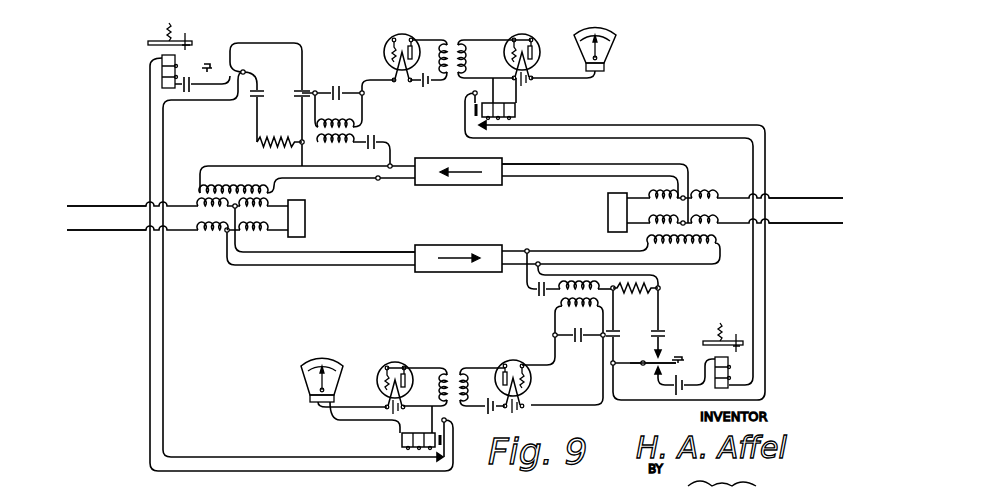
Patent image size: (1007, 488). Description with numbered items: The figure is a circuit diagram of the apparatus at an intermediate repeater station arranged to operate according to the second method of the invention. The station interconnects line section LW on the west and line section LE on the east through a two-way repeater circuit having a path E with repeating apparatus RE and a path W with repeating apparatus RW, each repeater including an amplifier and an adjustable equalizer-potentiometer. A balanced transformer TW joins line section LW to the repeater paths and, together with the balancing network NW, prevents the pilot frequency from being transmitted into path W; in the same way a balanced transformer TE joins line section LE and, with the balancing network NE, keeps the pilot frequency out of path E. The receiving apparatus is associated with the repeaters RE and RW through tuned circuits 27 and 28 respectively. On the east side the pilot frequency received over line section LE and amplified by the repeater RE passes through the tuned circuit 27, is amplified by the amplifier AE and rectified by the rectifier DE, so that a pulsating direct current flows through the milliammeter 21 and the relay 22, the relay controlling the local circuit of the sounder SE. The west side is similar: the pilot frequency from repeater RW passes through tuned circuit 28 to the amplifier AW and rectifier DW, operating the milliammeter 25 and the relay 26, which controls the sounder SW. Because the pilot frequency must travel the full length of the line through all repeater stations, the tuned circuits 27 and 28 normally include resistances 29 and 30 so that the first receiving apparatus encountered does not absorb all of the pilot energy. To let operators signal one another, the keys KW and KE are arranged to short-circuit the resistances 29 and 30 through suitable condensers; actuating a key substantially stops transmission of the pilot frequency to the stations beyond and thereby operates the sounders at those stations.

The milliammeter 21 is at (614, 32).
The relay 22 is at (516, 112).
The milliammeter 25 is at (299, 380).
The relay 26 is at (413, 431).
The tuned circuit 27 is at (367, 152).
The tuned circuit 28 is at (524, 284).
The resistance 29 is at (258, 140).
The resistance 30 is at (640, 293).
The sounder SW is at (160, 66).
The key KW is at (228, 56).
The amplifier AE is at (404, 35).
The rectifier DE is at (519, 34).
The repeater RE is at (435, 168).
The path E is at (560, 170).
The transformer TW is at (190, 190).
The line section LW is at (107, 218).
The balancing network NW is at (299, 230).
The path W is at (375, 258).
The repeater RW is at (483, 256).
The balancing network NE is at (614, 218).
The line section LE is at (793, 206).
The transformer TE is at (708, 234).
The key KE is at (684, 346).
The sounder SE is at (735, 375).
The rectifier DW is at (388, 364).
The amplifier AW is at (508, 364).